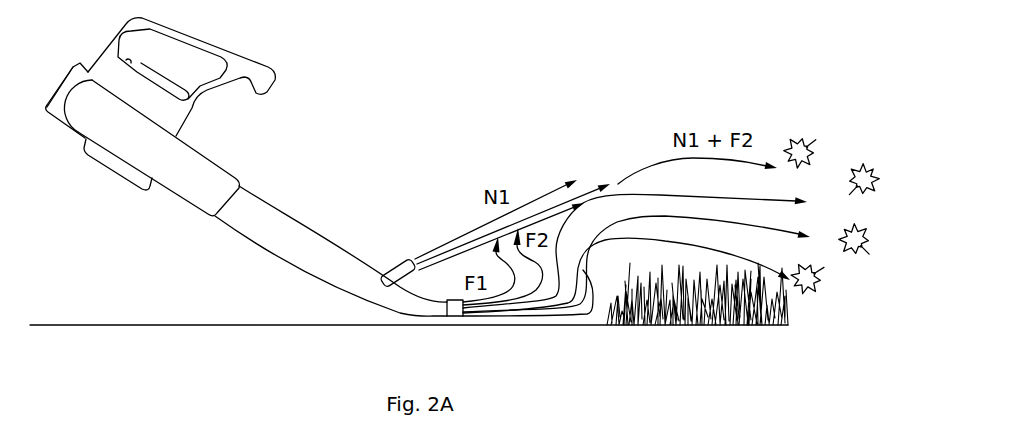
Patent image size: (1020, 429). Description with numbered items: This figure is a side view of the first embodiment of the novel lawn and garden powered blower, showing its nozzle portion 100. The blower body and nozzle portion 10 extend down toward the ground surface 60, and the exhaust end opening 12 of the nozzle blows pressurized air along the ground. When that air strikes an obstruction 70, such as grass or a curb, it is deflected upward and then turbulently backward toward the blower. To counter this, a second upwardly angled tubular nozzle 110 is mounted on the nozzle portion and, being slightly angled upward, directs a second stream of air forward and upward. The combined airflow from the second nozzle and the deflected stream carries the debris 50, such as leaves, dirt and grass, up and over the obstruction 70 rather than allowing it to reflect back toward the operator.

The nozzle portion 10 is at (278, 247).
The exhaust end opening 12 is at (448, 307).
The debris 50 is at (812, 264).
The ground surface 60 is at (585, 327).
The obstruction 70 is at (788, 310).
The nozzle portion 100 is at (422, 141).
The second upwardly angled tubular nozzle 110 is at (397, 268).